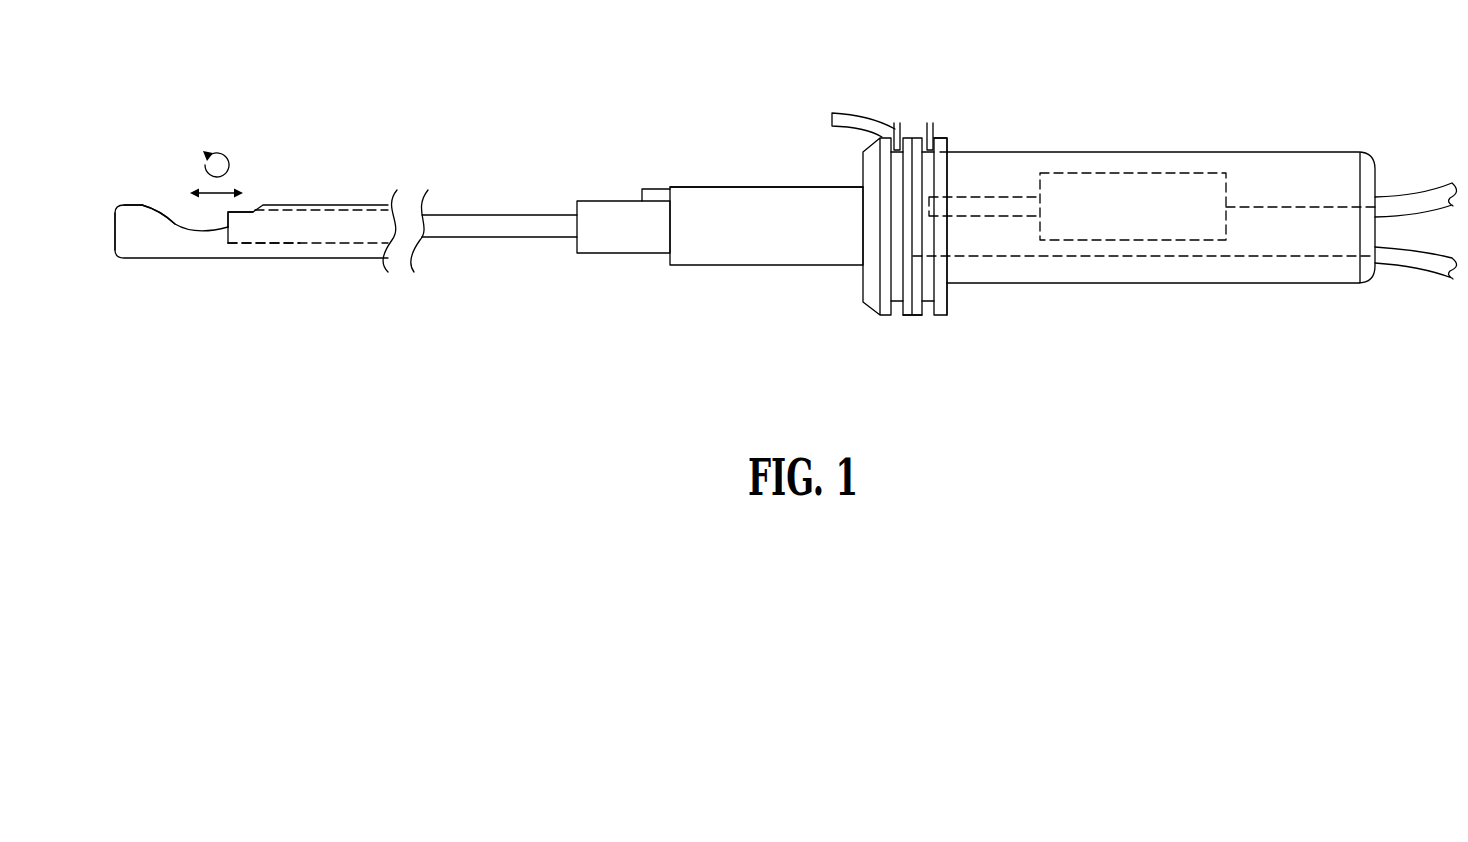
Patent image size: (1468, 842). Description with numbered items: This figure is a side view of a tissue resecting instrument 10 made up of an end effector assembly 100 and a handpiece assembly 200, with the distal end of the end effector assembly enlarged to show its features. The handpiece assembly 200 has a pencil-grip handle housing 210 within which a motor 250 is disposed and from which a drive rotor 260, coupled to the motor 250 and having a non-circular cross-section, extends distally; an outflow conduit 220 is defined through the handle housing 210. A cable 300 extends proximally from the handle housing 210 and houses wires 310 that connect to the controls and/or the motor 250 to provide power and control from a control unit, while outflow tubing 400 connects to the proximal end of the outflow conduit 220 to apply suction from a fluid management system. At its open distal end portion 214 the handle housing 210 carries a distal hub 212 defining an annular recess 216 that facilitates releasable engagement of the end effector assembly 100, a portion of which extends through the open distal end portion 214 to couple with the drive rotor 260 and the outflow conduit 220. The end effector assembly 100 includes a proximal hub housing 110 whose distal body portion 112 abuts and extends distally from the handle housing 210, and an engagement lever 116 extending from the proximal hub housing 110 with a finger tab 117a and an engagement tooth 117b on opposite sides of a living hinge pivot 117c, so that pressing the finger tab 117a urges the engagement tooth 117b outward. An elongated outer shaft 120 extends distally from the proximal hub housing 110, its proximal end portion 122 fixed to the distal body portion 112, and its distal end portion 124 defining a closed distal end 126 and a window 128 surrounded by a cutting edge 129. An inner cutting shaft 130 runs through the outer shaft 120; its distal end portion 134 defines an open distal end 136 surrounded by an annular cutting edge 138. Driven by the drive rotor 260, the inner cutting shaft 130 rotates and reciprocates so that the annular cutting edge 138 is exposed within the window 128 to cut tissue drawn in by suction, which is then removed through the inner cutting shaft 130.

The tissue resecting instrument 10 is at (622, 10).
The end effector assembly 100 is at (565, 146).
The proximal hub housing 110 is at (732, 257).
The distal body portion 112 is at (718, 193).
The engagement lever 116 is at (893, 82).
The finger tab 117a is at (833, 120).
The engagement tooth 117b is at (930, 143).
The living hinge pivot 117c is at (897, 143).
The elongated outer shaft 120 is at (461, 239).
The proximal end portion 122 is at (568, 214).
The distal end portion 124 is at (140, 259).
The closed distal end 126 is at (115, 232).
The window 128 is at (173, 219).
The cutting edge 129 is at (158, 214).
The inner cutting shaft 130 is at (350, 247).
The distal end portion 134 is at (272, 247).
The open distal end 136 is at (228, 225).
The annular cutting edge 138 is at (228, 215).
The handpiece assembly 200 is at (1101, 116).
The handle housing 210 is at (1163, 151).
The distal hub 212 is at (942, 145).
The open distal end portion 214 is at (917, 317).
The annular recess 216 is at (975, 168).
The outflow conduit 220 is at (1240, 258).
The motor 250 is at (1210, 173).
The drive rotor 260 is at (1013, 218).
The cable 300 is at (1398, 198).
The wires 310 is at (1268, 206).
The outflow tubing 400 is at (1410, 267).